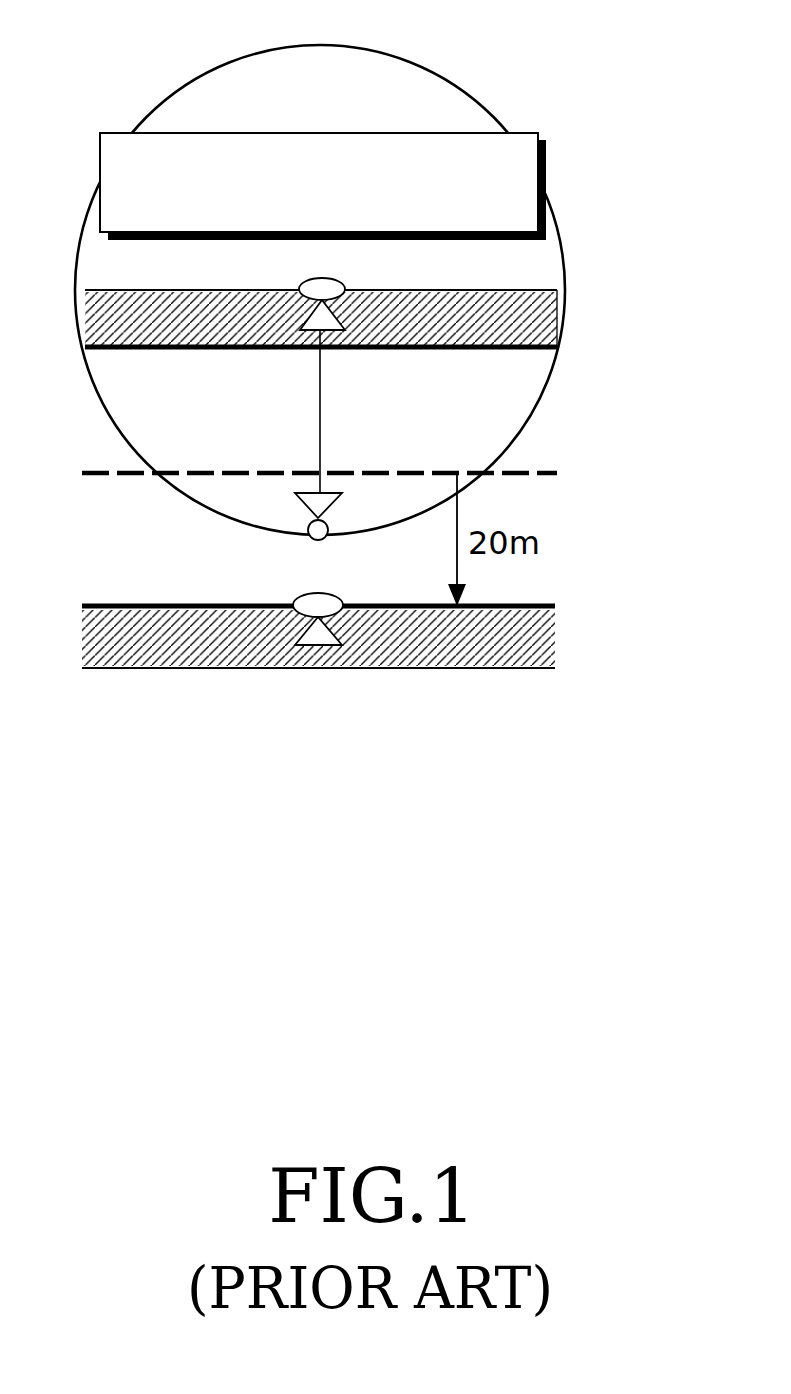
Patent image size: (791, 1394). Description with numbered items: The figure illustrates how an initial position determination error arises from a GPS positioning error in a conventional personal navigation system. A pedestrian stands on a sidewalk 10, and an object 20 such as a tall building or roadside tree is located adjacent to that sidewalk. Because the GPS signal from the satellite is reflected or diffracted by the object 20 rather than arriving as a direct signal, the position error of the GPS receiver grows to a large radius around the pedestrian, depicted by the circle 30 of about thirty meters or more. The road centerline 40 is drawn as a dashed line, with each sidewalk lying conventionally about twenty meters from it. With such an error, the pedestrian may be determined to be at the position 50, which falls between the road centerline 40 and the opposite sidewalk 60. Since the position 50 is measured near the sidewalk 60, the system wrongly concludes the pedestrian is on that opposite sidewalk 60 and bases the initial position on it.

The sidewalk 10 is at (557, 319).
The object 20 is at (308, 133).
The position error radius 30 is at (331, 44).
The road centerline 40 is at (535, 468).
The position 50 is at (310, 537).
The sidewalk 60 is at (540, 636).